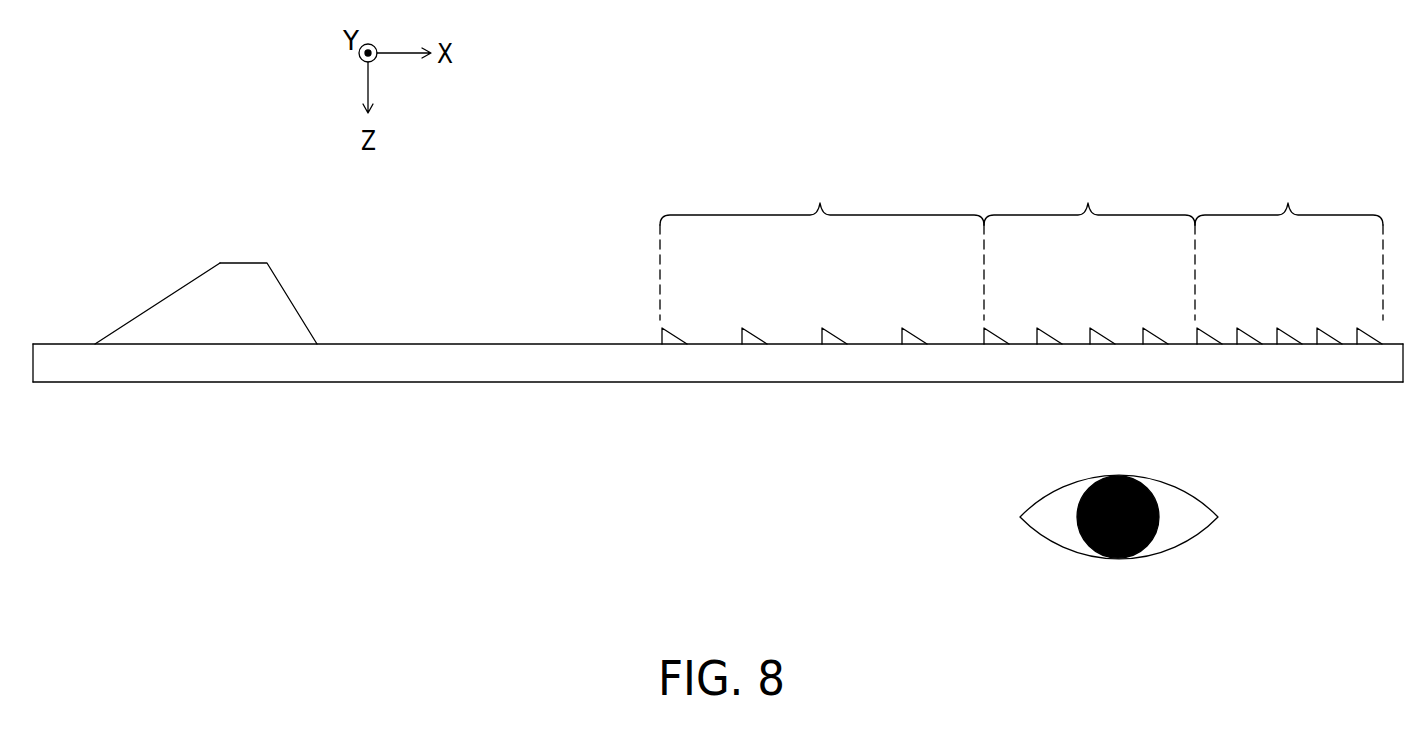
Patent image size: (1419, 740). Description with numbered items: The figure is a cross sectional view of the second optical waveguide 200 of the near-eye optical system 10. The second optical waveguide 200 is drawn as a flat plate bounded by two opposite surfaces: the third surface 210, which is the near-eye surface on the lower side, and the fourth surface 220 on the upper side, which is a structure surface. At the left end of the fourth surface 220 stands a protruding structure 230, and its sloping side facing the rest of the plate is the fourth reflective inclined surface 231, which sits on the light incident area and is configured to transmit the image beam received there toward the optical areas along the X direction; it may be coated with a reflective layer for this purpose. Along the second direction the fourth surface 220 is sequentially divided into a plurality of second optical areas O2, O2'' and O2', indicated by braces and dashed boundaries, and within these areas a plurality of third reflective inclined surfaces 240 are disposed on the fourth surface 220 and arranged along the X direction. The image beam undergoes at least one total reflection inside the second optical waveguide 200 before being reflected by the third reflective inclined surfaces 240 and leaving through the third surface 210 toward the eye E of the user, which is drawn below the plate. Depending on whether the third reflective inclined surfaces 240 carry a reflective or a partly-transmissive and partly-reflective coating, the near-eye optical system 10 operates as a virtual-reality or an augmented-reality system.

The near-eye optical system 10 is at (1326, 108).
The second optical waveguide 200 is at (455, 356).
The third surface 210 is at (543, 385).
The fourth surface 220 is at (543, 343).
The protruding structure 230 is at (243, 271).
The fourth reflective inclined surface 231 is at (158, 303).
The third reflective inclined surfaces 240 is at (765, 336).
The eye E is at (1218, 509).
The second optical area O2 is at (822, 246).
The second optical area O2'' is at (1089, 246).
The second optical area O2' is at (1289, 246).